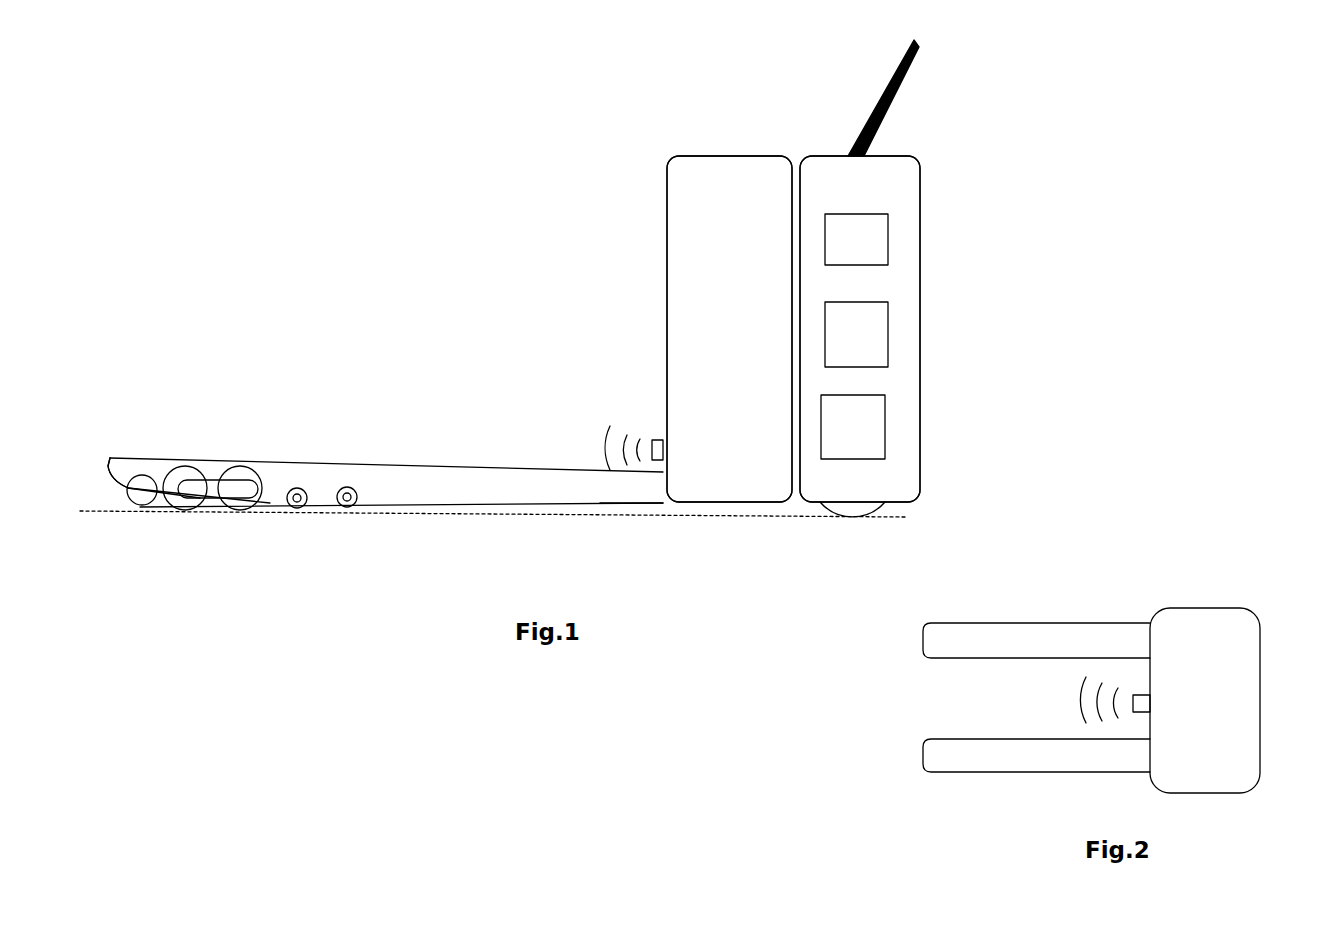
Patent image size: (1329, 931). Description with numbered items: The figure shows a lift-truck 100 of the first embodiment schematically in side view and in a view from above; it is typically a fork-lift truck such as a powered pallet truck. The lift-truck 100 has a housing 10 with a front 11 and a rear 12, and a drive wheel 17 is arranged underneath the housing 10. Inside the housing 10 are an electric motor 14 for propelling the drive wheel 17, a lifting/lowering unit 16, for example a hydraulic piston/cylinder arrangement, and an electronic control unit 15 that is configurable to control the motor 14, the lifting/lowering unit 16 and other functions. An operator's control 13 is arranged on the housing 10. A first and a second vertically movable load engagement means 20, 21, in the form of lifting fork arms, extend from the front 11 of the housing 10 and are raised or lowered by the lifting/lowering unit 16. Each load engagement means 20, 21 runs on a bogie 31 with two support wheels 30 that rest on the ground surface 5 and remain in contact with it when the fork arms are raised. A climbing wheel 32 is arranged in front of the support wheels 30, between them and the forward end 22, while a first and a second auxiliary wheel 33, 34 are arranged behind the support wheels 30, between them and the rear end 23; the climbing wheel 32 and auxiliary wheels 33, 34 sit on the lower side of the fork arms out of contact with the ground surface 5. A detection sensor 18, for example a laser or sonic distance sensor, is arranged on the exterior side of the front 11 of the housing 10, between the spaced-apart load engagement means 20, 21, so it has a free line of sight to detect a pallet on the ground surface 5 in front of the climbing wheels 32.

In FIG. 1, the ground surface 5 is at (545, 516).
In FIG. 1, the housing 10 is at (728, 155).
In FIG. 2, the housing 10 is at (1220, 607).
In FIG. 1, the front 11 is at (663, 278).
In FIG. 1, the rear 12 is at (918, 353).
In FIG. 1, the operator's control 13 is at (910, 65).
In FIG. 1, the electric motor 14 is at (853, 427).
In FIG. 1, the electronic control unit 15 is at (856, 239).
In FIG. 1, the lifting/lowering unit 16 is at (856, 334).
In FIG. 1, the drive wheel 17 is at (870, 510).
In FIG. 1, the detection sensor 18 is at (647, 433).
In FIG. 2, the detection sensor 18 is at (1148, 698).
In FIG. 1, the first load engagement means 20 is at (405, 465).
In FIG. 2, the first load engagement means 20 is at (953, 772).
In FIG. 2, the second load engagement means 21 is at (937, 658).
In FIG. 1, the forward end 22 is at (165, 462).
In FIG. 1, the rear end 23 is at (647, 502).
In FIG. 1, the support wheel 30 is at (240, 508).
In FIG. 1, the bogie 31 is at (212, 483).
In FIG. 1, the climbing wheel 32 is at (140, 505).
In FIG. 1, the first auxiliary wheel 33 is at (290, 509).
In FIG. 1, the second auxiliary wheel 34 is at (350, 507).
In FIG. 1, the lift-truck 100 is at (973, 252).
In FIG. 2, the lift-truck 100 is at (1205, 528).